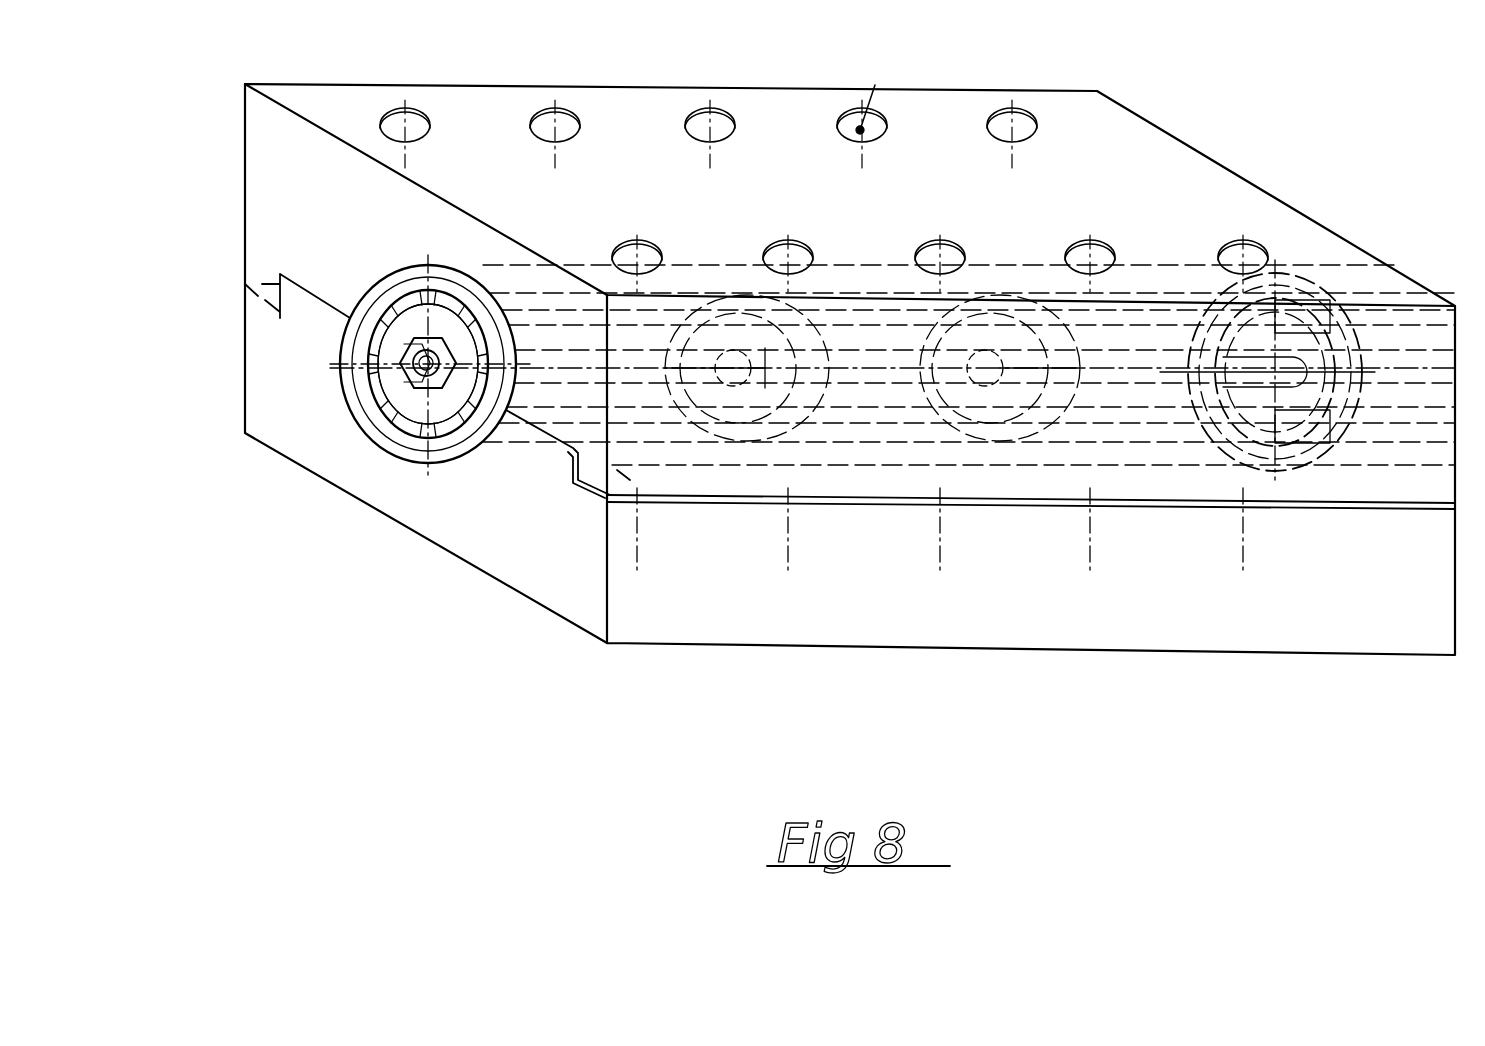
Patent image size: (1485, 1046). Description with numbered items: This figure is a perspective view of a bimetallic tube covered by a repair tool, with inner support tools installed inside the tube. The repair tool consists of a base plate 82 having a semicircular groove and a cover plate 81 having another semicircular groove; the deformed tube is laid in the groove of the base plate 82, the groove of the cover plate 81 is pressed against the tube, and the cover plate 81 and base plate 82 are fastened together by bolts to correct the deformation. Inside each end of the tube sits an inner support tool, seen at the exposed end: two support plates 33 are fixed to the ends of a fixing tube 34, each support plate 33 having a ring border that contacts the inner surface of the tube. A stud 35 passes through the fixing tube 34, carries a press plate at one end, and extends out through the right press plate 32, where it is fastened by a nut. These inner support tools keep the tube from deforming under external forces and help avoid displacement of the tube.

The cover plate 81 is at (468, 117).
The base plate 82 is at (393, 502).
The support plate 33 is at (397, 307).
The right press plate 32 is at (387, 382).
The stud 35 is at (428, 363).
The fixing tube 34 is at (648, 368).